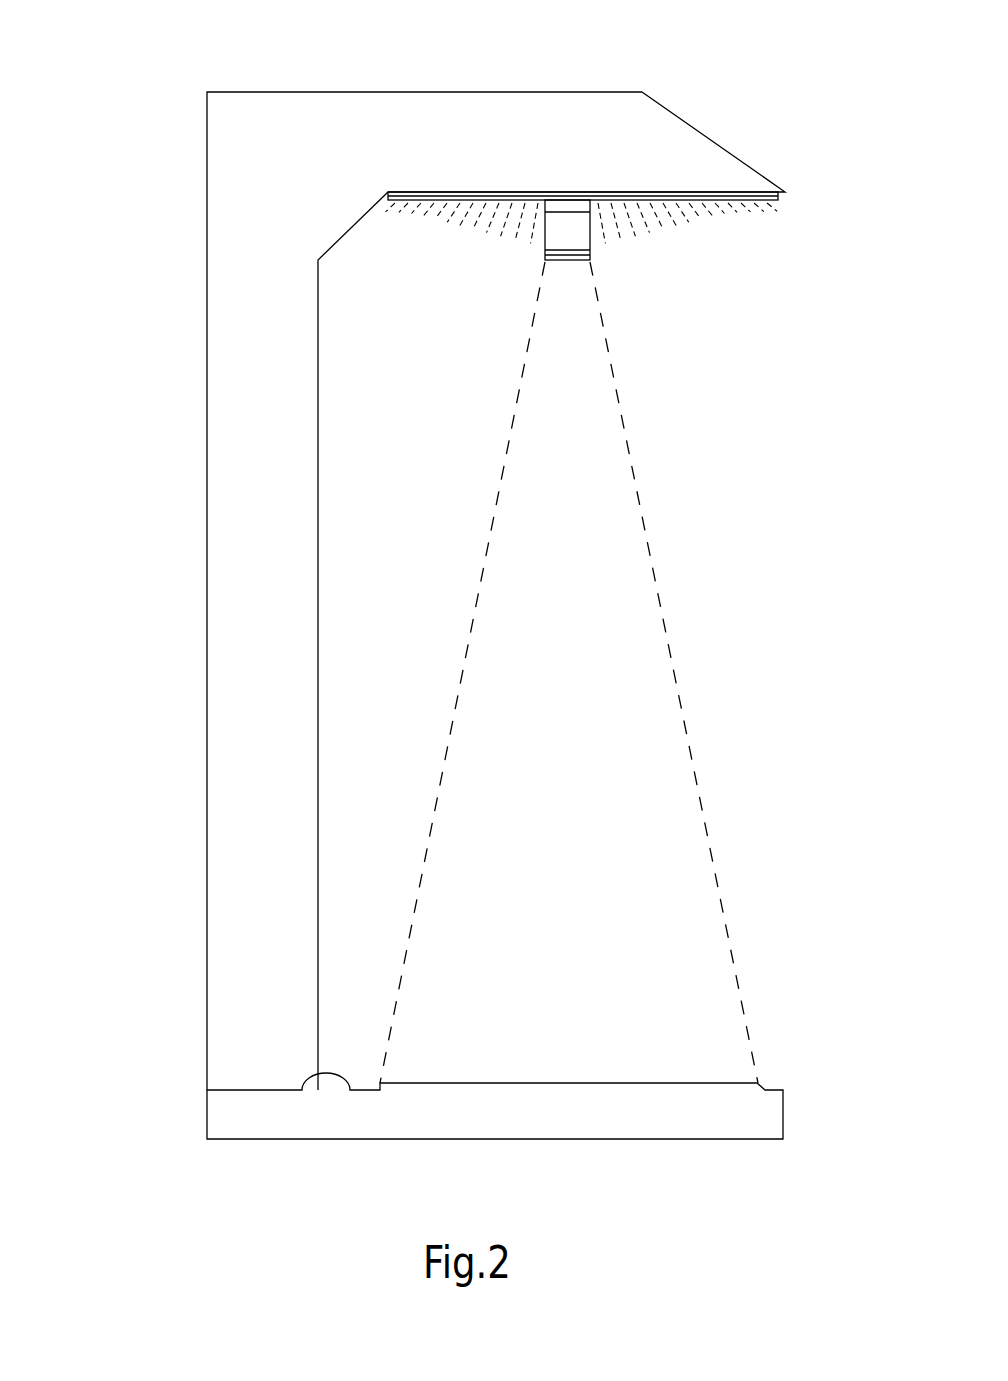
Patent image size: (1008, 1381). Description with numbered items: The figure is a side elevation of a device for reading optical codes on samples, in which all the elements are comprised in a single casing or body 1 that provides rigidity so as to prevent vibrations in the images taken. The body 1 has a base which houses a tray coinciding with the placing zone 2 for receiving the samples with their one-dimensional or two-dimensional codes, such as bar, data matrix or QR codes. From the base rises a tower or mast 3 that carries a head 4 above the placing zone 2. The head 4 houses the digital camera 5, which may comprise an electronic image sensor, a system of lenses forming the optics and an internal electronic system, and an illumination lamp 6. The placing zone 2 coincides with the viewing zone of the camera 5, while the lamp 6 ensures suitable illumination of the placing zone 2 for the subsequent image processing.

The casing or body 1 is at (180, 370).
The placing zone 2 is at (318, 1073).
The tower or mast 3 is at (223, 622).
The head 4 is at (562, 103).
The digital camera 5 is at (568, 262).
The illumination lamp 6 is at (755, 200).